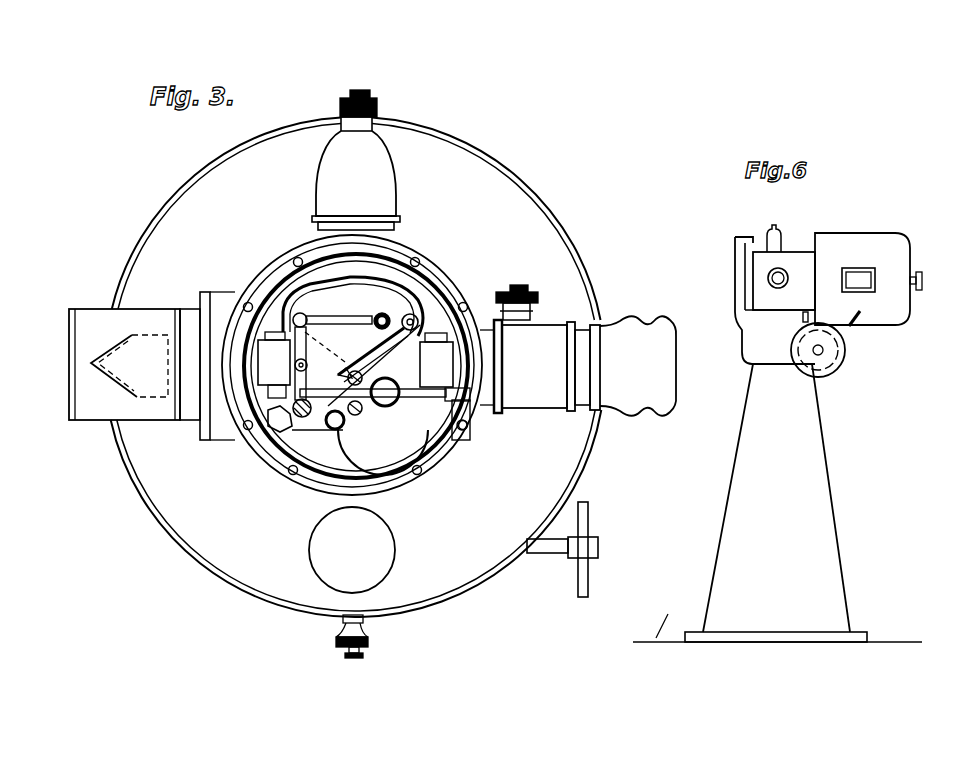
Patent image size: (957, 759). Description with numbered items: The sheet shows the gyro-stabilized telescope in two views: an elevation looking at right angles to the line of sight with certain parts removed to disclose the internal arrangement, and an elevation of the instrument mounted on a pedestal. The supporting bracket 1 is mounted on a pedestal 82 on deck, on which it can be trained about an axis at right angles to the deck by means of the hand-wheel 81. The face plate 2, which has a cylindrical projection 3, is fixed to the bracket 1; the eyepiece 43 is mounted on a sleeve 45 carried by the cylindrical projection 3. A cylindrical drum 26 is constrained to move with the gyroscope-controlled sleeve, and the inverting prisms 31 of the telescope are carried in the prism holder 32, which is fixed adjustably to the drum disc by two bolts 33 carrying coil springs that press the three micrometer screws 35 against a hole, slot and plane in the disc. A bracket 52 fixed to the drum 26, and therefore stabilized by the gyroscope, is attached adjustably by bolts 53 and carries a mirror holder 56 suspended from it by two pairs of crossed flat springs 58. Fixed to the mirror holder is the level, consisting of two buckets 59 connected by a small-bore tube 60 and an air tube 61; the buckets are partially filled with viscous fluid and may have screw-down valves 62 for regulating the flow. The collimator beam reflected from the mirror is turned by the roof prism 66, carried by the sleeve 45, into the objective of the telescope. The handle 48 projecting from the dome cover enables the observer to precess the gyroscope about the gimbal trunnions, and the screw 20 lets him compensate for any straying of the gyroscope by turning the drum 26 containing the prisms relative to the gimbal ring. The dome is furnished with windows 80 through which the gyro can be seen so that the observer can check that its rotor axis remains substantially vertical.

In FIG. 6, the supporting bracket 1 is at (742, 253).
In FIG. 3, the face plate 2 is at (522, 206).
In FIG. 3, the cylindrical projection 3 is at (449, 310).
In FIG. 3, the screw 20 is at (368, 562).
In FIG. 6, the screw 20 is at (798, 330).
In FIG. 3, the cylindrical drum 26 is at (460, 298).
In FIG. 3, the inverting prisms 31 is at (388, 442).
In FIG. 3, the prism holder 32 is at (426, 420).
In FIG. 3, the bolts 33 is at (352, 413).
In FIG. 3, the micrometer screws 35 is at (439, 405).
In FIG. 3, the eyepiece 43 is at (580, 342).
In FIG. 6, the eyepiece 43 is at (769, 280).
In FIG. 3, the sleeve 45 is at (300, 296).
In FIG. 3, the handle 48 is at (580, 548).
In FIG. 6, the handle 48 is at (857, 322).
In FIG. 3, the bracket 52 is at (330, 300).
In FIG. 3, the bolts 53 is at (413, 358).
In FIG. 3, the mirror holder 56 is at (338, 400).
In FIG. 3, the crossed flat springs 58 is at (374, 372).
In FIG. 3, the buckets 59 is at (262, 360).
In FIG. 3, the small-bore tube 60 is at (437, 400).
In FIG. 3, the air tube 61 is at (342, 281).
In FIG. 3, the screw-down valves 62 is at (470, 212).
In FIG. 3, the roof prism 66 is at (128, 366).
In FIG. 6, the windows 80 is at (868, 280).
In FIG. 6, the hand-wheel 81 is at (843, 358).
In FIG. 6, the pedestal 82 is at (732, 491).